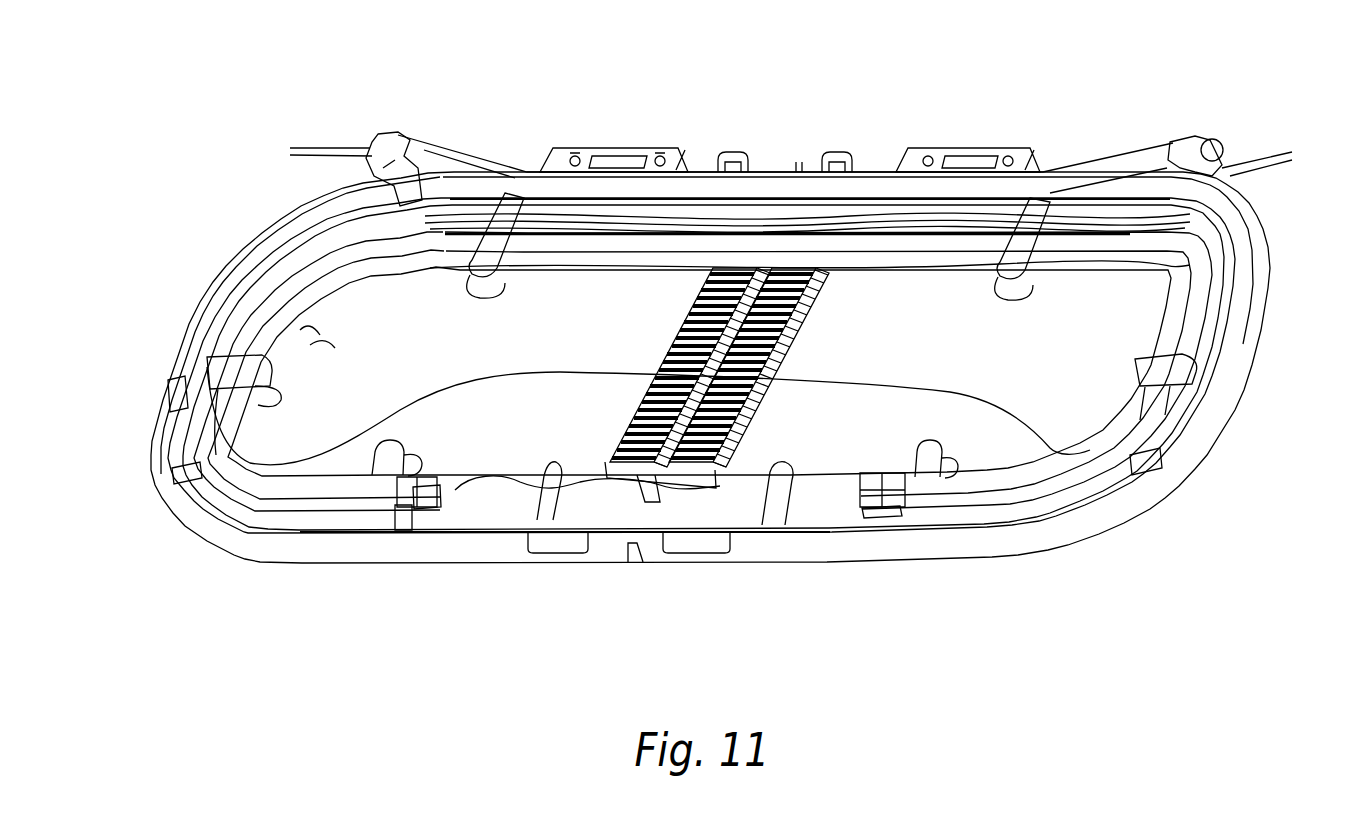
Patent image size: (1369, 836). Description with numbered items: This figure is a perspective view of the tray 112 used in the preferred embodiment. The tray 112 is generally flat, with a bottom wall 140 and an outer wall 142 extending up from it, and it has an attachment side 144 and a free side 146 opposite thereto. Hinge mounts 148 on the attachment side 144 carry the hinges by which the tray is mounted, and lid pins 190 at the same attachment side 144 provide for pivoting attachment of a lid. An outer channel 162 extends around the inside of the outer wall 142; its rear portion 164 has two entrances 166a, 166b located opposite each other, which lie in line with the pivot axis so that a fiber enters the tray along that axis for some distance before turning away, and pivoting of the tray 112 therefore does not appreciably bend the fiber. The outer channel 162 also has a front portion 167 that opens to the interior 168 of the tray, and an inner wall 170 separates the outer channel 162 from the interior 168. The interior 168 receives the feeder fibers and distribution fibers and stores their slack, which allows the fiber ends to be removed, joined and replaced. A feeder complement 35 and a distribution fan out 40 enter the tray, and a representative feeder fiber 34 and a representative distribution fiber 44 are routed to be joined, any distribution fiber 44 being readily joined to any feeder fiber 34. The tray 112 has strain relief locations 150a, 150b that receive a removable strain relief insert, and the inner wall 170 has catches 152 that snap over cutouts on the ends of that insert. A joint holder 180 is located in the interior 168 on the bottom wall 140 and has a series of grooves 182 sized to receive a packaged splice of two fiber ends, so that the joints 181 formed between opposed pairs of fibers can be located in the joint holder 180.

The feeder fiber 34 is at (290, 345).
The feeder complement 35 is at (318, 146).
The distribution fan out 40 is at (1270, 172).
The distribution fiber 44 is at (575, 380).
The tray 112 is at (977, 550).
The bottom wall 140 is at (669, 387).
The outer wall 142 is at (1263, 283).
The attachment side 144 is at (537, 162).
The free side 146 is at (470, 552).
The hinge mount 148 is at (675, 150).
The strain relief location 150a is at (873, 520).
The strain relief location 150b is at (420, 520).
The catch 152 is at (452, 468).
The outer channel 162 is at (903, 158).
The rear portion 164 is at (806, 165).
The entrance 166a is at (370, 146).
The entrance 166b is at (1222, 146).
The front portion 167 is at (1032, 525).
The interior 168 is at (393, 312).
The inner wall 170 is at (297, 488).
The joint holder 180 is at (754, 378).
The joint 181 is at (700, 345).
The groove 182 is at (790, 335).
The lid pin 190 is at (742, 152).